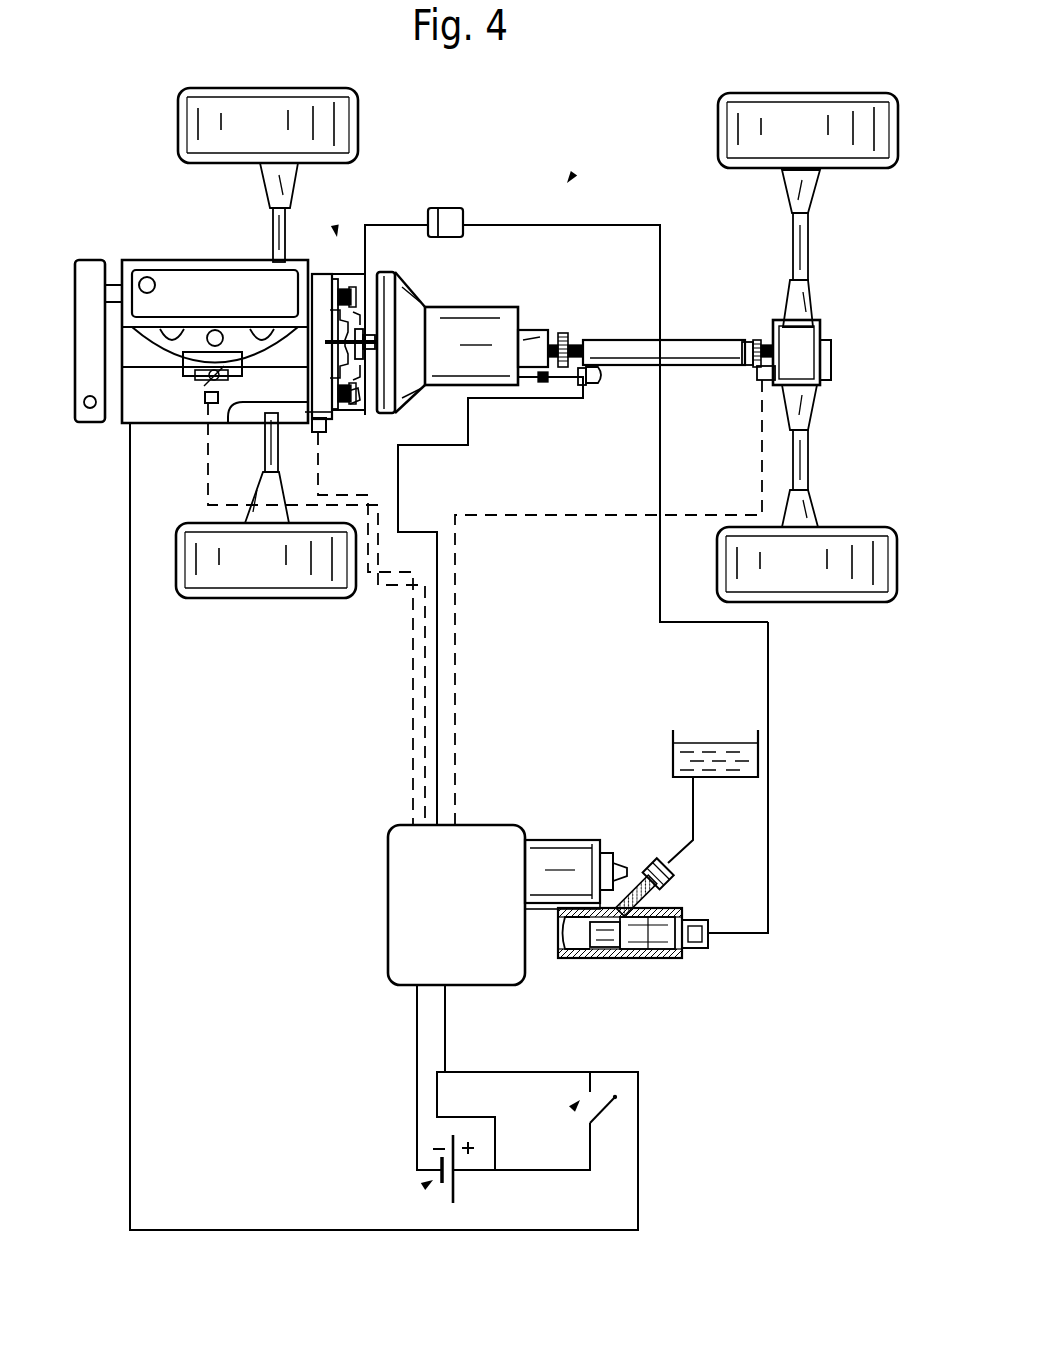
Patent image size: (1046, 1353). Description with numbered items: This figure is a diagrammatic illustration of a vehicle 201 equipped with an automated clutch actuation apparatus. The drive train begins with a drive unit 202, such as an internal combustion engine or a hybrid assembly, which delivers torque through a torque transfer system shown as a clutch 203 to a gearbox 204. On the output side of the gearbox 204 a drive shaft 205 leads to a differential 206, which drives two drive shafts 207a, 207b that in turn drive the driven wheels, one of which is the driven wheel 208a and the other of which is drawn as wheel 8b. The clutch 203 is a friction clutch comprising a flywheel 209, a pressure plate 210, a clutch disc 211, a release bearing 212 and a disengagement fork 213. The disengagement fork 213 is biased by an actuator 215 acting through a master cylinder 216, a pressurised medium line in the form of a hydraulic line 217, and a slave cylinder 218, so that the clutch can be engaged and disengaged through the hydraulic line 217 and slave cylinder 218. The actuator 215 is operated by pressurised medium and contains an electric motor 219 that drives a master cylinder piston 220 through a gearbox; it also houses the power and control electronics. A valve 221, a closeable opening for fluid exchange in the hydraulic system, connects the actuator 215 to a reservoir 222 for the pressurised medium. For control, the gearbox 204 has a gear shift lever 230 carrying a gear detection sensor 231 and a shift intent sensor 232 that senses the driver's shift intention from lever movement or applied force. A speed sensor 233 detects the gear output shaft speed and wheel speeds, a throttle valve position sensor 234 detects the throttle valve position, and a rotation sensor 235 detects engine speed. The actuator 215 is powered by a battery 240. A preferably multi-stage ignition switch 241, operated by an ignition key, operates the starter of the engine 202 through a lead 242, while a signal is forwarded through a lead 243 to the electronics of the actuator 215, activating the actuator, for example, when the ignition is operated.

The vehicle 201 is at (567, 183).
The drive unit 202 is at (185, 280).
The clutch 203 is at (337, 237).
The gearbox 204 is at (468, 322).
The drive shaft 205 is at (683, 357).
The differential 206 is at (800, 347).
The drive shaft 207a is at (806, 255).
The drive shaft 207b is at (807, 460).
The driven wheel 208a is at (845, 118).
The driven wheel 8b is at (852, 548).
The flywheel 209 is at (322, 392).
The pressure plate 210 is at (357, 390).
The clutch disc 211 is at (342, 285).
The release bearing 212 is at (364, 365).
The disengagement fork 213 is at (370, 267).
The actuator 215 is at (402, 952).
The master cylinder 216 is at (657, 935).
The hydraulic line 217 is at (768, 862).
The slave cylinder 218 is at (450, 210).
The electric motor 219 is at (552, 853).
The master cylinder piston 220 is at (610, 958).
The valve 221 is at (655, 860).
The reservoir 222 is at (697, 757).
The gear shift lever 230 is at (597, 384).
The gear detection sensor 231 is at (543, 383).
The shift intent sensor 232 is at (582, 385).
The speed sensor 233 is at (767, 378).
The throttle valve position sensor 234 is at (205, 403).
The rotation sensor 235 is at (318, 425).
The battery 240 is at (433, 1180).
The ignition switch 241 is at (580, 1100).
The lead 242 is at (615, 1237).
The lead 243 is at (533, 1073).